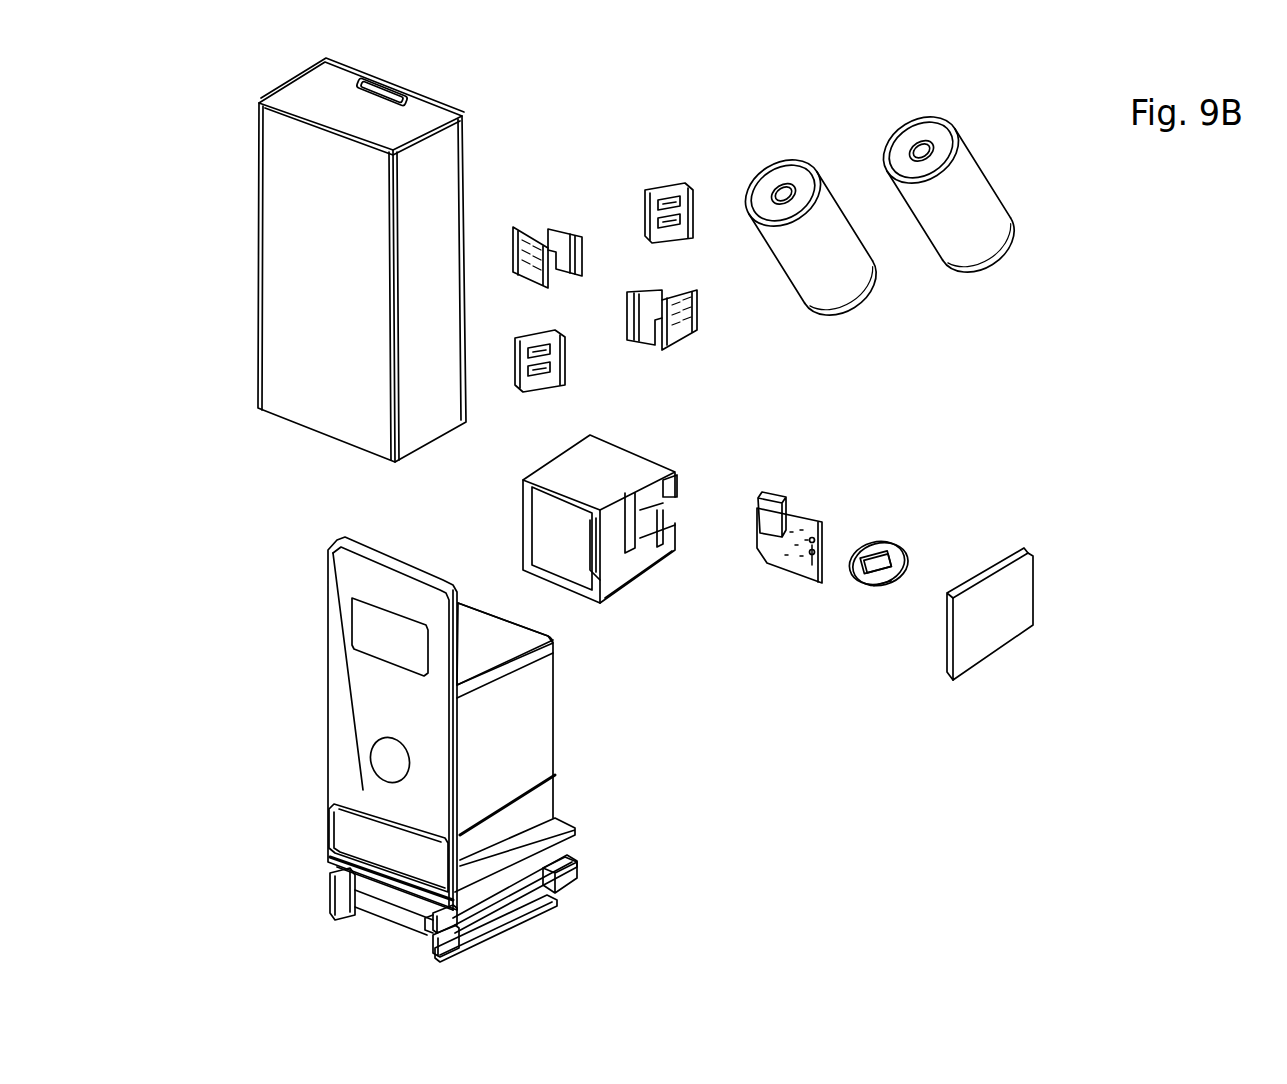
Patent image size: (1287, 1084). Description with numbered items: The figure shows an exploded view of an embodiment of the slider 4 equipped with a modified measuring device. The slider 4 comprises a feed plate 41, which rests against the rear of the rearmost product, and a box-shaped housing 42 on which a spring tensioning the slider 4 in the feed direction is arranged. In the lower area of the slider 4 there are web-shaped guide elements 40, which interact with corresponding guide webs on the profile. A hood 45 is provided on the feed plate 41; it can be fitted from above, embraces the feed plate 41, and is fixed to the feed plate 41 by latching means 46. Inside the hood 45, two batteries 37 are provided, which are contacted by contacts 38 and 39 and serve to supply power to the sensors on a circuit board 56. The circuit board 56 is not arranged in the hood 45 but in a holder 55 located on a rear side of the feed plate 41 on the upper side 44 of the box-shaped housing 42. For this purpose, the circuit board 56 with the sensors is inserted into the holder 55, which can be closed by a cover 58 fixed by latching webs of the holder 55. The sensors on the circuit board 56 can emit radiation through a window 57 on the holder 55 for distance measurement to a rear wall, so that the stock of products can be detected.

The slider 4 is at (603, 742).
The batteries 37 is at (832, 272).
The contact 38 is at (665, 215).
The contact 39 is at (555, 370).
The web-shaped guide elements 40 is at (330, 893).
The feed plate 41 is at (390, 690).
The box-shaped housing 42 is at (530, 705).
The upper side 44 is at (490, 637).
The hood 45 is at (300, 318).
The latching means 46 is at (408, 96).
The holder 55 is at (575, 470).
The circuit board 56 is at (792, 520).
The window 57 is at (877, 562).
The cover 58 is at (990, 608).